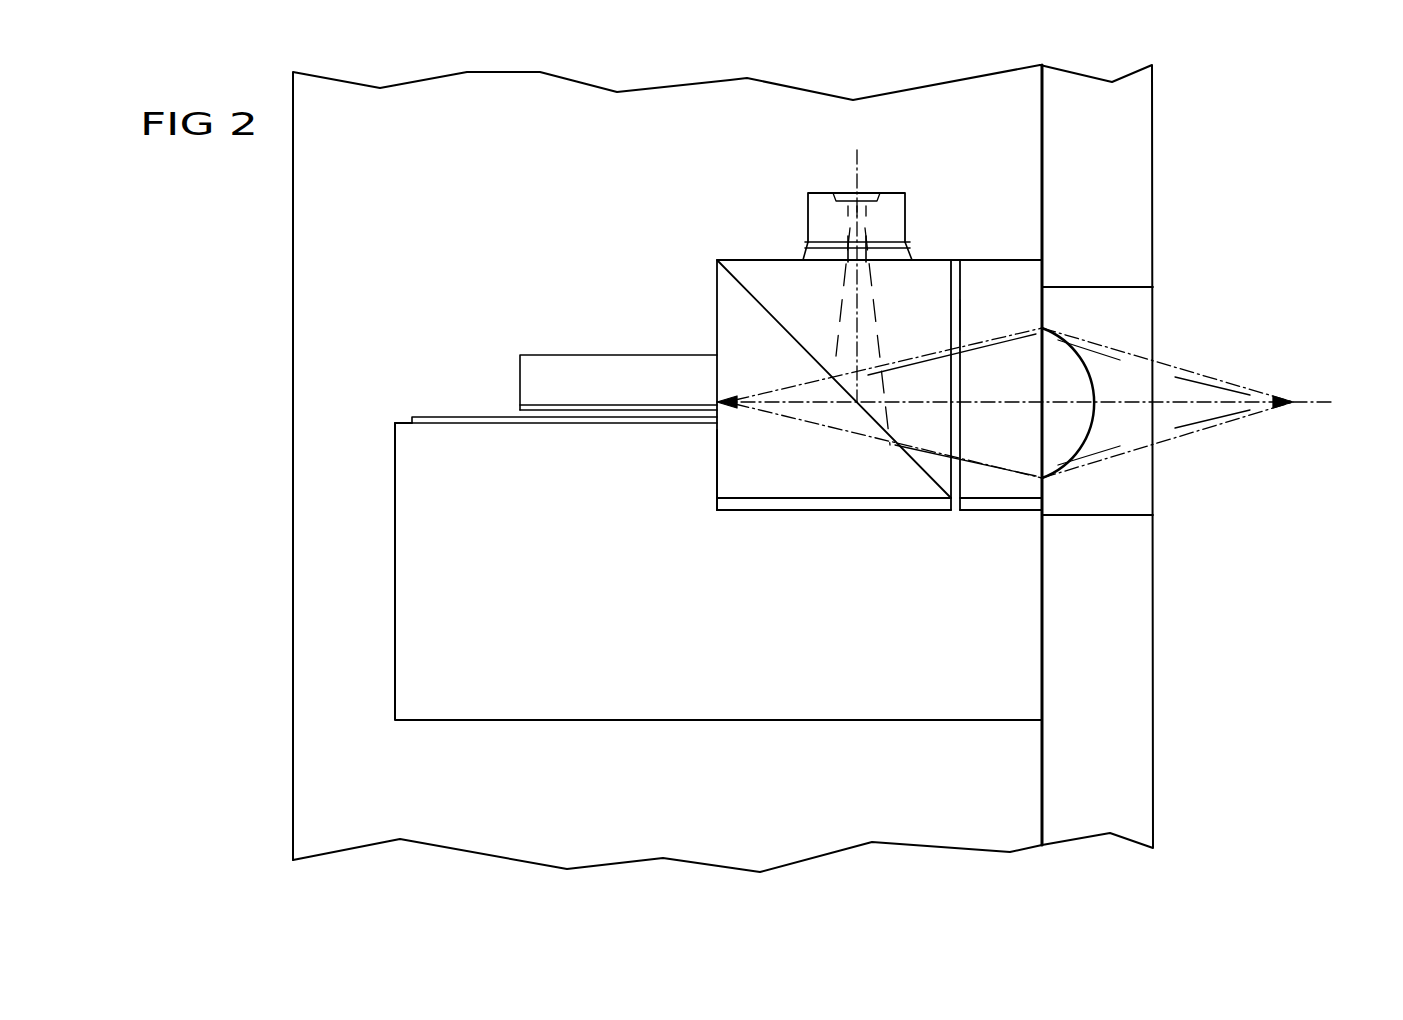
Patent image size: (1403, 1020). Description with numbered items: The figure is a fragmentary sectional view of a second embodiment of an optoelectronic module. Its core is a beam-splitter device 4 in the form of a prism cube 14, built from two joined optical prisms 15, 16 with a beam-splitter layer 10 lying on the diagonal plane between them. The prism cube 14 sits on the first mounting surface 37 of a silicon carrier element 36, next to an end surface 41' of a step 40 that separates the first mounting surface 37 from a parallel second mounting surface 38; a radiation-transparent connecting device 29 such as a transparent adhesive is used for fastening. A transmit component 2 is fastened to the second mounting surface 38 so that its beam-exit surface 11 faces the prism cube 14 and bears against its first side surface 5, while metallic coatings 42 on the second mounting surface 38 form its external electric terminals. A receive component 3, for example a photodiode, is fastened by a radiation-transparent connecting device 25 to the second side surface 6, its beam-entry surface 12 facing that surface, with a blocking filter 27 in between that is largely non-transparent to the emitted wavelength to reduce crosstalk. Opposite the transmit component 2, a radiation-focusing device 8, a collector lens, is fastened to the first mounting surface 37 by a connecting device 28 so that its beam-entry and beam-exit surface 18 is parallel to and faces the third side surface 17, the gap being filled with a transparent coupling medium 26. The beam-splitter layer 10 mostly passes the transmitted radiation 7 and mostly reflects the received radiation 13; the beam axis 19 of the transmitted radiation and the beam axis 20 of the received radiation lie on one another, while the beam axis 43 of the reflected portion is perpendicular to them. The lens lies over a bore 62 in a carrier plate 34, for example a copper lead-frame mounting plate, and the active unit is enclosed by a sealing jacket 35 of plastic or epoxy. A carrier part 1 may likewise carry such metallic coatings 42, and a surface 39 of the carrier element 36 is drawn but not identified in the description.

The carrier part 1 is at (1043, 268).
The transmit component 2 is at (540, 366).
The receive component 3 is at (882, 195).
The beam-splitter device 4 is at (817, 192).
The prism cube 14 is at (817, 192).
The first side surface 5 is at (842, 357).
The second side surface 6 is at (770, 262).
The transmitted radiation 7 is at (816, 433).
The radiation-focusing device 8 is at (1086, 362).
The beam-splitter layer 10 is at (776, 318).
The beam-exit surface 11 is at (716, 382).
The beam-entry surface 12 is at (912, 247).
The received radiation 13 is at (1195, 430).
The optical prism 15 is at (925, 277).
The optical prism 16 is at (718, 272).
The third side surface 17 is at (932, 425).
The beam-entry and beam-exit surface 18 is at (961, 312).
The beam axis of the transmitted radiation 19 is at (1226, 401).
The beam axis of the received radiation 20 is at (1022, 355).
The radiation-transparent connecting device 25 is at (822, 264).
The transparent coupling medium 26 is at (868, 500).
The blocking filter 27 is at (865, 206).
The connecting device 28 is at (1010, 512).
The radiation-transparent connecting device 29 is at (958, 262).
The carrier plate 34 is at (1135, 133).
The sealing jacket 35 is at (445, 801).
The carrier element 36 is at (757, 682).
The first mounting surface 37 is at (973, 512).
The second mounting surface 38 is at (400, 420).
The support block bottom surface 39 is at (912, 719).
The step 40 is at (830, 407).
The end surface 41' is at (672, 470).
The metallic coatings 42 is at (440, 417).
The beam axis of the reflected received radiation 43 is at (852, 192).
The bore 62 is at (1145, 503).